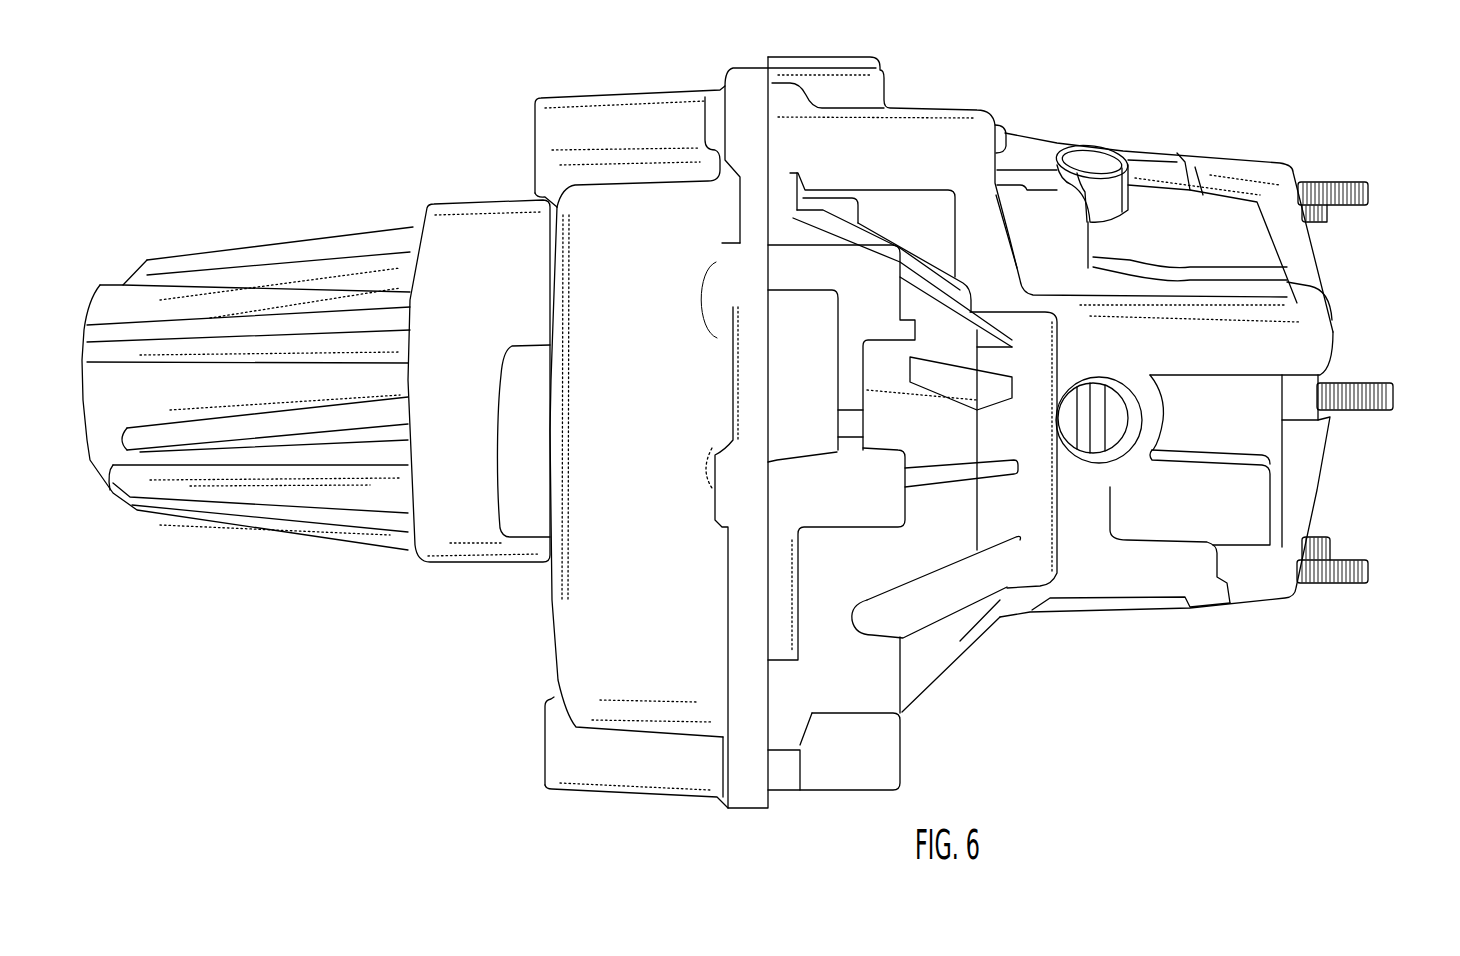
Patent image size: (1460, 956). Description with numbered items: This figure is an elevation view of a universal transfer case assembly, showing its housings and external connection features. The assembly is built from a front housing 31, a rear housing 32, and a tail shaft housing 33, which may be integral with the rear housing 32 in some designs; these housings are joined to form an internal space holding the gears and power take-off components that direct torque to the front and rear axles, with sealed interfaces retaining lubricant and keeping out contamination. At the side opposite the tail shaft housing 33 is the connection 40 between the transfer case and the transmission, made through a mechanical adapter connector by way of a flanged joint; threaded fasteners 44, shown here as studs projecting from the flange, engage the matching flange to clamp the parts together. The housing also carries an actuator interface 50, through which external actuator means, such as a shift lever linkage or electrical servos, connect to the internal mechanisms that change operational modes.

The front housing 31 is at (1214, 133).
The rear housing 32 is at (641, 77).
The tail shaft housing 33 is at (304, 230).
The connection 40 is at (1339, 309).
The threaded fasteners 44 is at (1377, 167).
The actuator interface 50 is at (1083, 480).